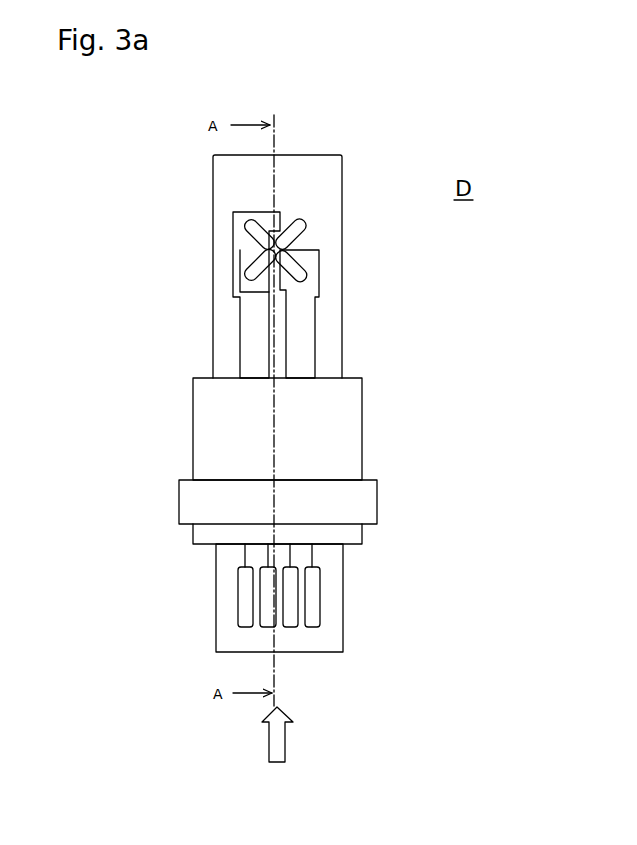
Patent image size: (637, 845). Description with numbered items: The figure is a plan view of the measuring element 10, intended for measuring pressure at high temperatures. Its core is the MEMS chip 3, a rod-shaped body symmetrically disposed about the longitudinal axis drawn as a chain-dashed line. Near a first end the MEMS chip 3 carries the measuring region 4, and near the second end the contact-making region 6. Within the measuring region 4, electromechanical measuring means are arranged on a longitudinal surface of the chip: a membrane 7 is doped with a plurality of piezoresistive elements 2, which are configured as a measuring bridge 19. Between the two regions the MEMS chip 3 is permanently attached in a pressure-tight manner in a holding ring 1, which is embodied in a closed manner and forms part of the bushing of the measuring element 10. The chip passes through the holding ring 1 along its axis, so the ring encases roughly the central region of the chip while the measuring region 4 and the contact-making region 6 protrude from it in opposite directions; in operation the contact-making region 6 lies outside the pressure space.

The measuring element 10 is at (258, 353).
The MEMS chip 3 is at (343, 153).
The measuring region 4 is at (251, 265).
The measuring bridge 19 is at (311, 209).
The membrane 7 is at (305, 236).
The piezoresistive elements 2 is at (317, 249).
The holding ring 1 is at (322, 454).
The contact-making region 6 is at (168, 532).